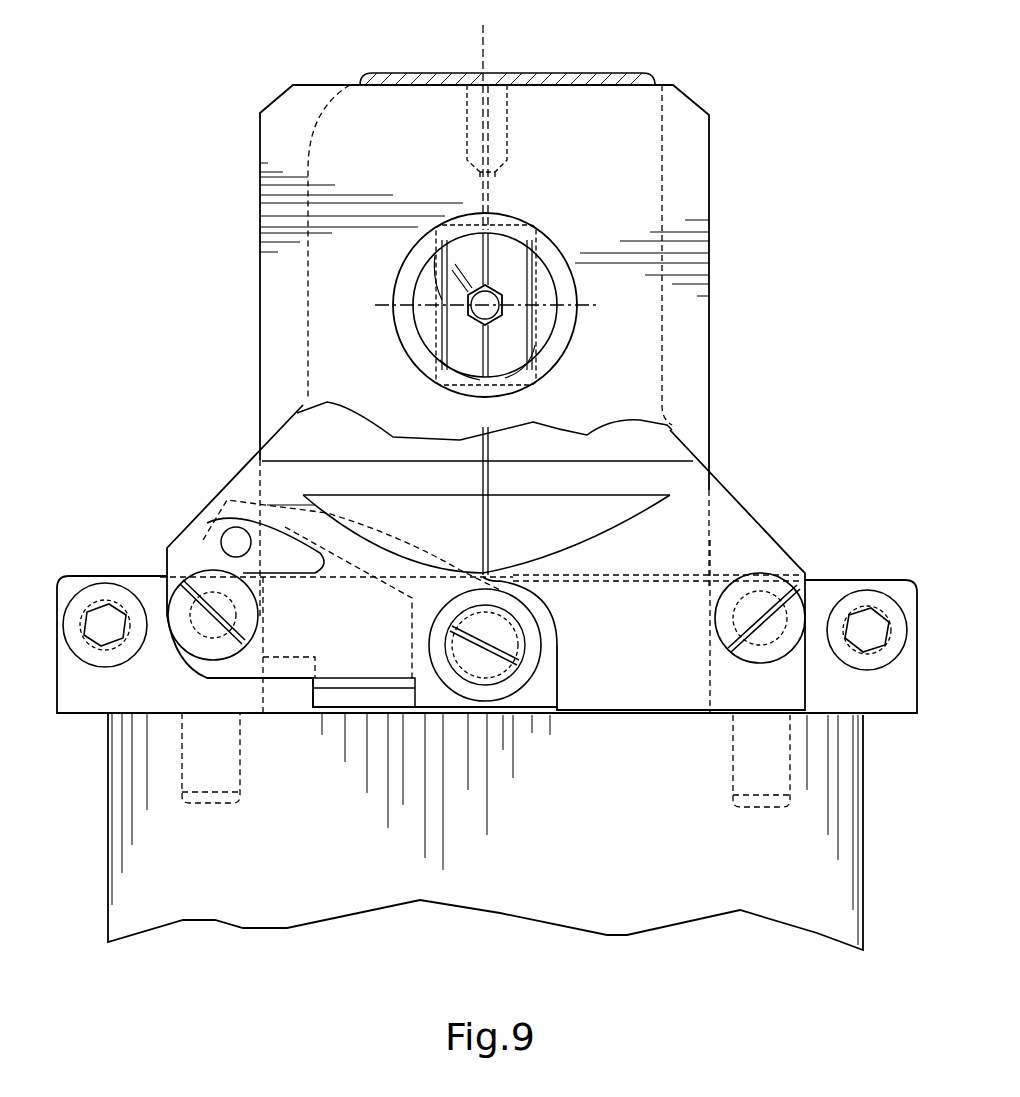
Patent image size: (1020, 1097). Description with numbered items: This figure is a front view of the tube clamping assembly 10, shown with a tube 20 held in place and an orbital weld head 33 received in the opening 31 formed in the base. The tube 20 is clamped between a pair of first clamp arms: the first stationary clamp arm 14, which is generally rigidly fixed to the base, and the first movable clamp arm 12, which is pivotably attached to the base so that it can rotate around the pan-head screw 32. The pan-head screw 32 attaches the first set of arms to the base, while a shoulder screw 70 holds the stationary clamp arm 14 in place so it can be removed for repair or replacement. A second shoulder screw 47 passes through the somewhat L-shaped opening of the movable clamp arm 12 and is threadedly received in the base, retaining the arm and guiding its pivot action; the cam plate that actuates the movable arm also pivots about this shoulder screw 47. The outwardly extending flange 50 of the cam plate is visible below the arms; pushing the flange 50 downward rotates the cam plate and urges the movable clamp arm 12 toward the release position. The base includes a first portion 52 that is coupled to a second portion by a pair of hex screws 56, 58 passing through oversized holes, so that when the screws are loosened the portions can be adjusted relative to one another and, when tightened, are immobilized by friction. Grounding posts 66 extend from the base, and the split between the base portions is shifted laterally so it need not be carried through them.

The tube clamping assembly 10 is at (200, 246).
The first movable clamp arm 12 is at (320, 432).
The first stationary clamp arm 14 is at (655, 440).
The tube 20 is at (492, 290).
The opening 31 is at (655, 757).
The pan-head screw 32 is at (495, 630).
The orbital weld head 33 is at (693, 175).
The shoulder screw 47 is at (207, 587).
The flange 50 is at (352, 700).
The first portion 52 is at (71, 590).
The hex screw 56 is at (122, 600).
The hex screw 58 is at (866, 595).
The grounding posts 66 is at (213, 760).
The shoulder screw 70 is at (763, 590).